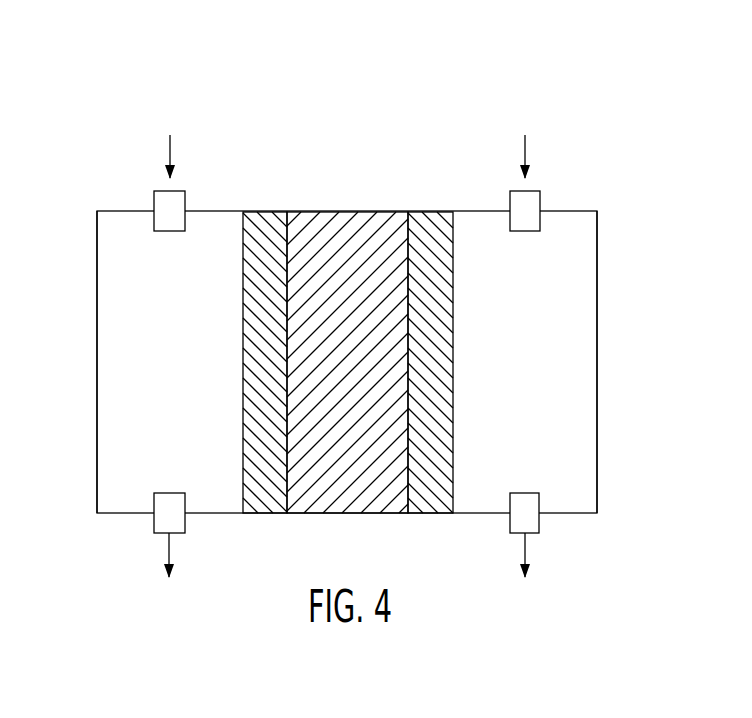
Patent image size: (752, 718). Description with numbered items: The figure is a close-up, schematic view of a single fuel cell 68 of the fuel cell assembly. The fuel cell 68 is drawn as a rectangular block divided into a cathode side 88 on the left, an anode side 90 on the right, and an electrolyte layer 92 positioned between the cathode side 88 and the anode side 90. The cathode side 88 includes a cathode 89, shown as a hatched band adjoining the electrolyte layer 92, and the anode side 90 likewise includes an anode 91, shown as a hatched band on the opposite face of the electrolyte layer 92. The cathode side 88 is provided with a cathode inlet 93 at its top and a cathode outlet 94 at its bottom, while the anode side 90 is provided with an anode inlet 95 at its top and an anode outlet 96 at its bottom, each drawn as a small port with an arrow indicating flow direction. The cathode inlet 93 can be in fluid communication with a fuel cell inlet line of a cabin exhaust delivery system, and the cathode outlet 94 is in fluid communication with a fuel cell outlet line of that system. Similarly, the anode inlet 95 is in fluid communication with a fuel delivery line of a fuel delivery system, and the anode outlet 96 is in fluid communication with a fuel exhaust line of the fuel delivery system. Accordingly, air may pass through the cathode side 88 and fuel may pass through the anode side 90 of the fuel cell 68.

The fuel cell 68 is at (126, 86).
The cathode side 88 is at (116, 346).
The cathode 89 is at (265, 234).
The anode side 90 is at (562, 284).
The anode 91 is at (437, 440).
The electrolyte layer 92 is at (360, 356).
The cathode inlet 93 is at (163, 201).
The cathode outlet 94 is at (154, 518).
The anode inlet 95 is at (530, 201).
The anode outlet 96 is at (540, 520).